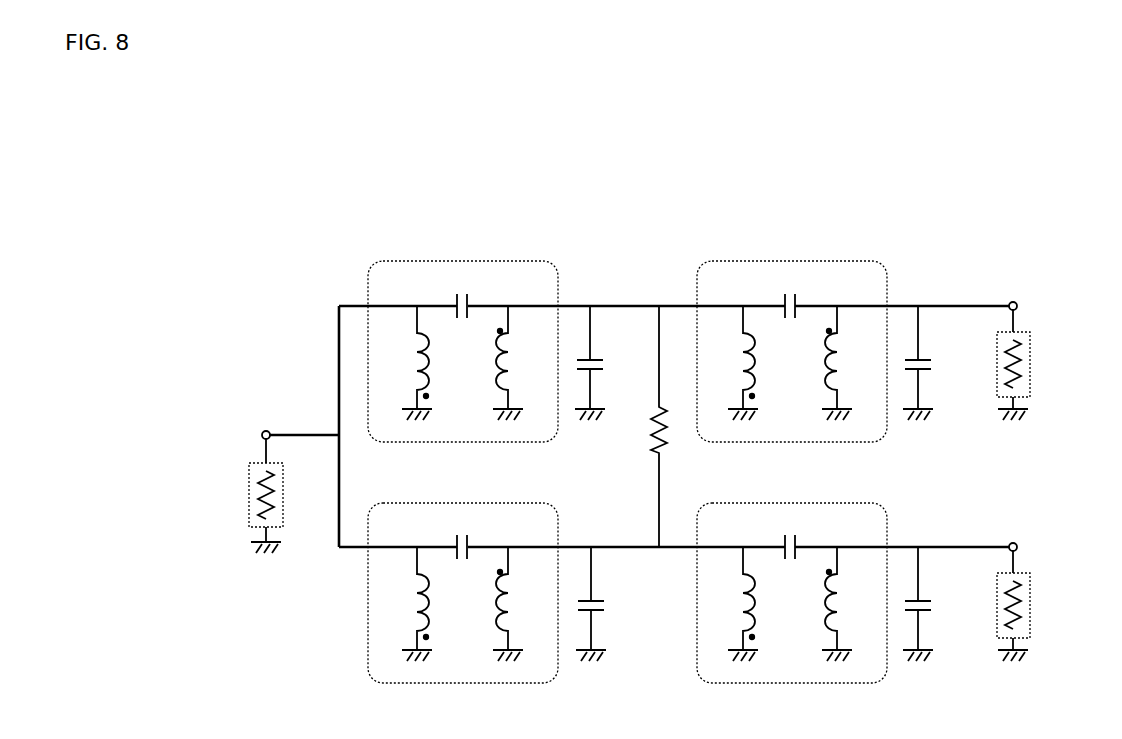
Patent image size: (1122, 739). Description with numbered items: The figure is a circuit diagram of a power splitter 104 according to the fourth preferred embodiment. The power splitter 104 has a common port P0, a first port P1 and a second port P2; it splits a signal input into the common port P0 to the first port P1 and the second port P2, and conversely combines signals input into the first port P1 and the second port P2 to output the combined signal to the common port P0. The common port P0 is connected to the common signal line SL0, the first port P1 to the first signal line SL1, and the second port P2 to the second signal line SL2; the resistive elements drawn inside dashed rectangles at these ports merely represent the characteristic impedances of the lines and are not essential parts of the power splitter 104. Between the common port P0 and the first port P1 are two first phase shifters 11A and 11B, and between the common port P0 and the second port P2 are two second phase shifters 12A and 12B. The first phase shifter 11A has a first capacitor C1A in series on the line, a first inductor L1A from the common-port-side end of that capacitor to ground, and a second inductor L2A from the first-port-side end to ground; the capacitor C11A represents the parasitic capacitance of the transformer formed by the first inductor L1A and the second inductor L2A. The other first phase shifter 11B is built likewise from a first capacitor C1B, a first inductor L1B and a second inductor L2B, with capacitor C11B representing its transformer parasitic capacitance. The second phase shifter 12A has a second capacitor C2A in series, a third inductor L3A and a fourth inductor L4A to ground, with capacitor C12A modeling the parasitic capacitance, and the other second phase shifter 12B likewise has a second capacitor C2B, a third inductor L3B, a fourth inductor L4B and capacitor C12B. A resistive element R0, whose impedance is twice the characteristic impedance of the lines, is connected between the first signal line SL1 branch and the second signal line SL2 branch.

The power splitter 104 is at (236, 262).
The first phase shifter 11A is at (455, 260).
The first phase shifter 11B is at (790, 260).
The second phase shifter 12A is at (472, 685).
The second phase shifter 12B is at (803, 685).
The common signal line SL0 is at (296, 430).
The first signal line SL1 is at (357, 300).
The second signal line SL2 is at (357, 540).
The common port P0 is at (229, 420).
The first port P1 is at (1056, 290).
The second port P2 is at (1056, 532).
The first capacitor C1A is at (462, 295).
The first capacitor C1B is at (790, 295).
The second capacitor C2A is at (465, 535).
The second capacitor C2B is at (793, 535).
The first inductor L1A is at (403, 363).
The second inductor L2A is at (522, 363).
The first inductor L1B is at (729, 363).
The second inductor L2B is at (851, 363).
The third inductor L3A is at (403, 604).
The fourth inductor L4A is at (522, 604).
The third inductor L3B is at (729, 604).
The fourth inductor L4B is at (851, 604).
The capacitor C11A is at (615, 363).
The capacitor C11B is at (943, 363).
The capacitor C12A is at (616, 604).
The capacitor C12B is at (943, 604).
The resistive element R0 is at (675, 426).